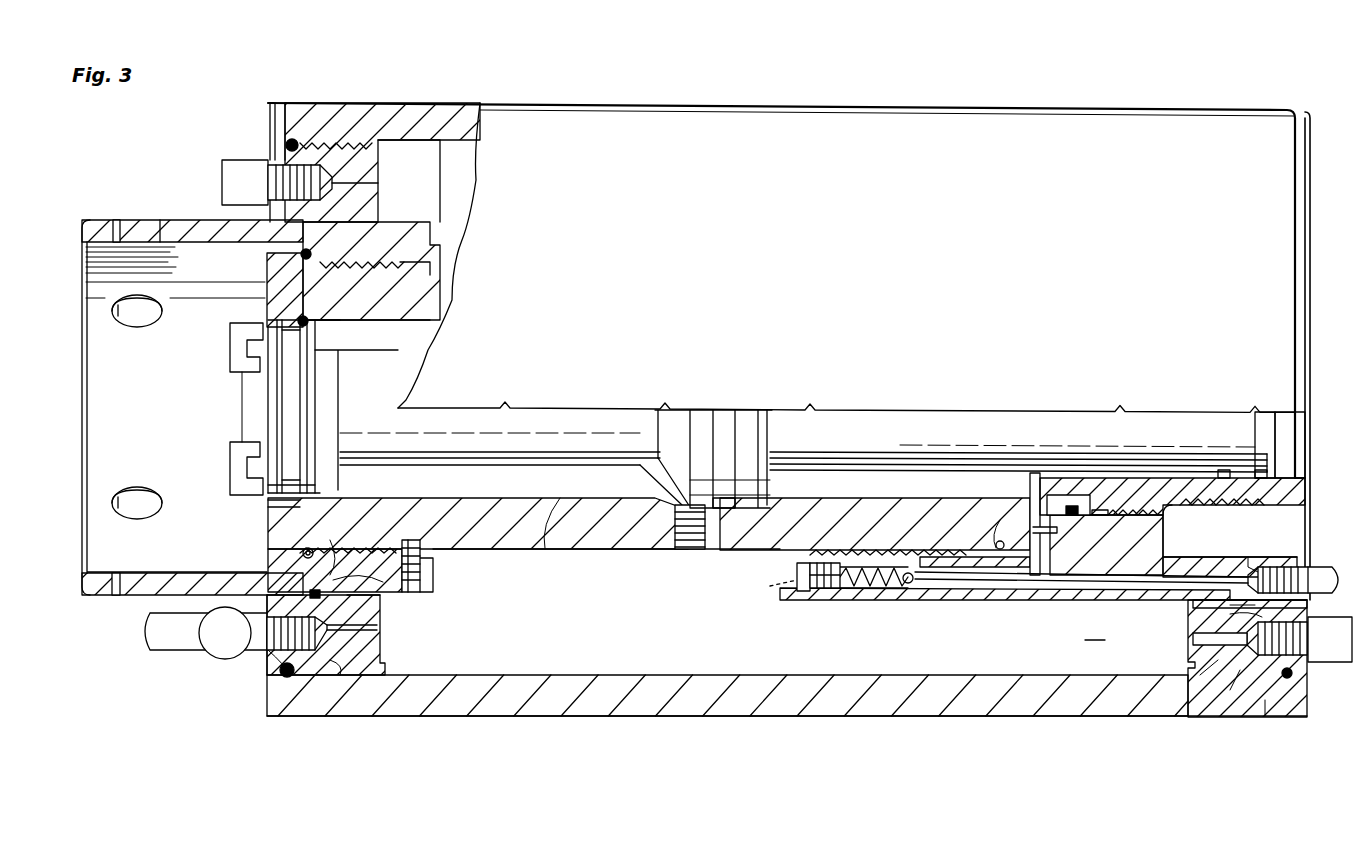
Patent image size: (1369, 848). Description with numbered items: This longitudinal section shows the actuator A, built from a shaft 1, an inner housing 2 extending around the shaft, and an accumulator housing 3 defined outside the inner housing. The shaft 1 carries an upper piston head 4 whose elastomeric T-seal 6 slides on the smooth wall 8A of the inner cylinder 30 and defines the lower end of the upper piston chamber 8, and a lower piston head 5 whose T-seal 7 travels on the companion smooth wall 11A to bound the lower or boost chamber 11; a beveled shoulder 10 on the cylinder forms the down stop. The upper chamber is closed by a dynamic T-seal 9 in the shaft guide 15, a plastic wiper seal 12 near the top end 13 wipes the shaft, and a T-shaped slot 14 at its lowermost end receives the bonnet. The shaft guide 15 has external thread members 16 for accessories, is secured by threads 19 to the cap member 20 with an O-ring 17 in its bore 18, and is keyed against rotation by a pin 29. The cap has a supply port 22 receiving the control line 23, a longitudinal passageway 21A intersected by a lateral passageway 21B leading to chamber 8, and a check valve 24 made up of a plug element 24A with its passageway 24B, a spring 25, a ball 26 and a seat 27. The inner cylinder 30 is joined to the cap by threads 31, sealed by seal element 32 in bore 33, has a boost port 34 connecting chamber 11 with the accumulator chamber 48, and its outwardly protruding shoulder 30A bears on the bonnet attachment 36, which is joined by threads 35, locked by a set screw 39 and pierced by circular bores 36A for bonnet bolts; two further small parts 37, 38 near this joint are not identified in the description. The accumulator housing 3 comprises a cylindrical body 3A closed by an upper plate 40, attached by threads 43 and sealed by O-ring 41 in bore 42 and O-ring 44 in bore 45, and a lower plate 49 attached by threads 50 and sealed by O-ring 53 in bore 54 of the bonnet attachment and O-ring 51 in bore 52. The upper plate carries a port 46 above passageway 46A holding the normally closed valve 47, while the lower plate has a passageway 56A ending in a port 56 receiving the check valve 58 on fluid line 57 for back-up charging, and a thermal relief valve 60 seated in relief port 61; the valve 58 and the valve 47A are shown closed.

The shaft 1 is at (1187, 410).
The actuator A is at (1239, 83).
The inner housing 2 is at (447, 148).
The accumulator housing 3 is at (729, 736).
The cylindrical body 3A is at (572, 718).
The upper piston head 4 is at (750, 410).
The lower piston head 5 is at (316, 402).
The T-seal element 6 is at (738, 550).
The T-seal element 7 is at (270, 508).
The upper piston chamber 8 is at (832, 488).
The smooth wall 8A is at (874, 490).
The T-seal 9 is at (1240, 478).
The beveled shoulder 10 is at (650, 520).
The lower piston chamber 11 is at (418, 486).
The smooth wall 11A is at (396, 318).
The wiper seal 12 is at (1262, 478).
The top end 13 is at (1268, 412).
The T shaped slot 14 is at (254, 370).
The shaft guide 15 is at (1310, 490).
The thread members 16 is at (1268, 503).
The O-ring 17 is at (1098, 508).
The bore 18 is at (1068, 505).
The threads 19 is at (1105, 495).
The cap member 20 is at (1307, 607).
The passageway 21A is at (1180, 575).
The latitudinal passageway 21B is at (1034, 473).
The supply port 22 is at (1248, 557).
The control line 23 is at (1312, 572).
The check valve 24 is at (846, 606).
The lower plug element 24A is at (804, 593).
The passageway 24B is at (774, 599).
The spring element 25 is at (884, 590).
The ball element 26 is at (908, 588).
The seat 27 is at (920, 588).
The pin 29 is at (1058, 590).
The inner cylinder 30 is at (548, 542).
The shoulder member 30A is at (277, 253).
The threads 31 is at (890, 548).
The seal element 32 is at (1000, 540).
The bore 33 is at (990, 525).
The boost port 34 is at (690, 553).
The threads 35 is at (356, 548).
The bonnet attachment 36 is at (102, 597).
The circular bores 36A is at (152, 495).
The o-ring 37 is at (302, 554).
The groove 38 is at (296, 546).
The set screw 39 is at (418, 592).
The upper plate 40 is at (1300, 700).
The O-ring 41 is at (1230, 616).
The bore 42 is at (1230, 605).
The threads 43 is at (1215, 685).
The O-ring 44 is at (1286, 679).
The bore 45 is at (1268, 716).
The port 46 is at (1240, 685).
The passageway 46A is at (1193, 640).
The valve 47 is at (1265, 690).
The valve 47A is at (1326, 662).
The accumulator chamber 48 is at (1092, 629).
The lower plate 49 is at (268, 700).
The threads 50 is at (325, 680).
The O-ring element 51 is at (280, 671).
The bore 52 is at (300, 710).
The O-ring element 53 is at (328, 550).
The bore 54 is at (388, 603).
The port 56 is at (340, 670).
The passageway 56A is at (378, 630).
The fluid line 57 is at (158, 650).
The check valve 58 is at (217, 655).
The thermal relief valve 60 is at (236, 160).
The relief port 61 is at (380, 183).